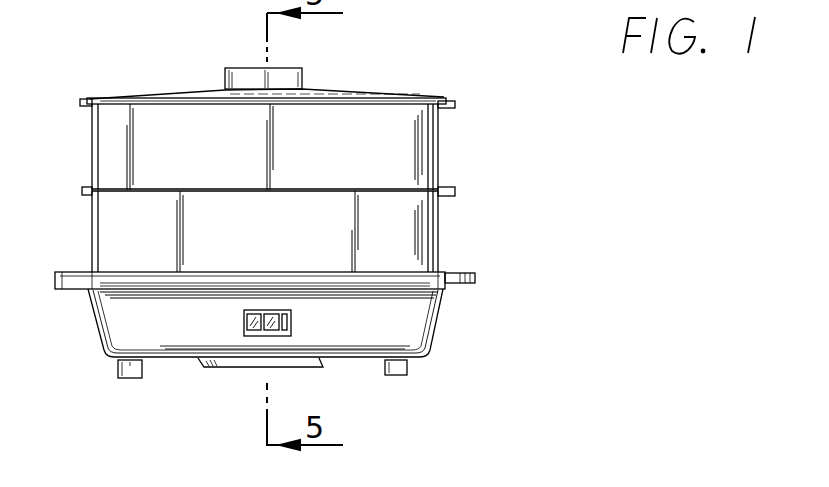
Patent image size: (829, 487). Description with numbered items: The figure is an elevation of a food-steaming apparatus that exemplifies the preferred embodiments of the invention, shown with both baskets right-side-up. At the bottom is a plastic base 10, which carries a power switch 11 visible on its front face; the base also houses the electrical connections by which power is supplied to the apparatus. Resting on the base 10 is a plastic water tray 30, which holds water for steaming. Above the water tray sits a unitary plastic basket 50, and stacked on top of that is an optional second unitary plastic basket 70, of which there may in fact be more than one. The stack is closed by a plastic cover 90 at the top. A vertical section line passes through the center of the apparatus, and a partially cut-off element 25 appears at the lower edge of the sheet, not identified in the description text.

The lid 90 is at (352, 80).
The upper steaming tray 70 is at (460, 144).
The lower steaming tray 50 is at (452, 220).
The water reservoir / collector tray 30 is at (478, 258).
The base housing 10 is at (452, 322).
The control switch window 11 is at (258, 338).
The heating element 25 is at (663, 482).